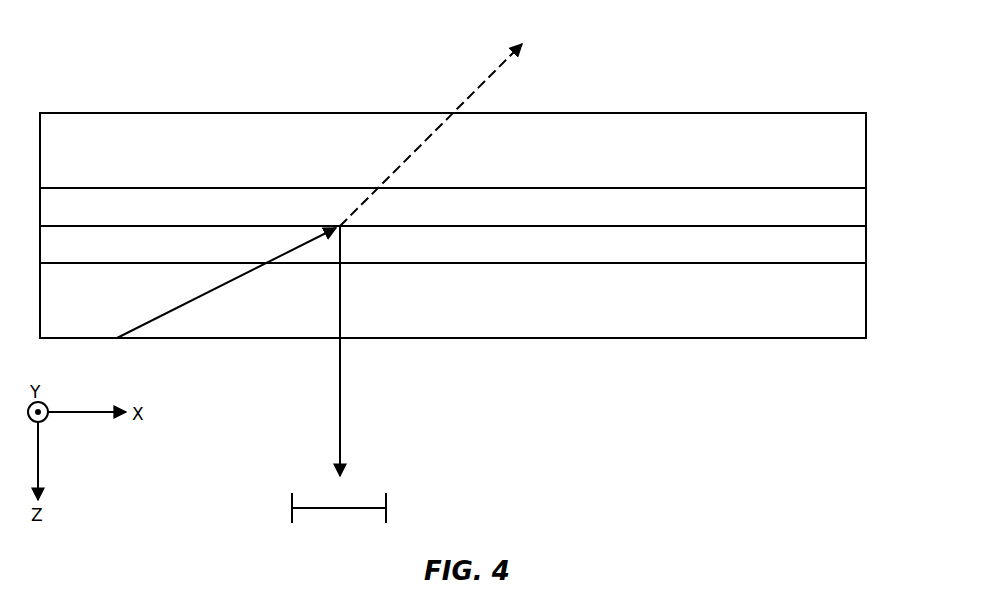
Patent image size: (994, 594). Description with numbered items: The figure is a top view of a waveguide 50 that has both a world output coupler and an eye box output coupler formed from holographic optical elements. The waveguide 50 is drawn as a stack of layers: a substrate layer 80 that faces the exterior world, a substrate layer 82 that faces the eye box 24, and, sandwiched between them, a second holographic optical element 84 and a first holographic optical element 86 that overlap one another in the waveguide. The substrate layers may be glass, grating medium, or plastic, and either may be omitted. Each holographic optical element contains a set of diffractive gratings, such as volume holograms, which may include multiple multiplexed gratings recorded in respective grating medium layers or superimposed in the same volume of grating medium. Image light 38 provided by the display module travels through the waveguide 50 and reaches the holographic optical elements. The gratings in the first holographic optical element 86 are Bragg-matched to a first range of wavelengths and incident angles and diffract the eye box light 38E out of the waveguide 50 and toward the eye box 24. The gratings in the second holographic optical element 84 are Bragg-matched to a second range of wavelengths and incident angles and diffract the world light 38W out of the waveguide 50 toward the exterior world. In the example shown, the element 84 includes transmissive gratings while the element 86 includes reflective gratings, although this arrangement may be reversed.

The waveguide 50 is at (771, 79).
The substrate layer 80 is at (853, 150).
The second holographic optical element 84 is at (853, 206).
The first holographic optical element 86 is at (853, 243).
The substrate layer 82 is at (853, 302).
The image light 38 is at (253, 265).
The world light 38W is at (488, 80).
The eye box light 38E is at (341, 300).
The eye box 24 is at (388, 510).